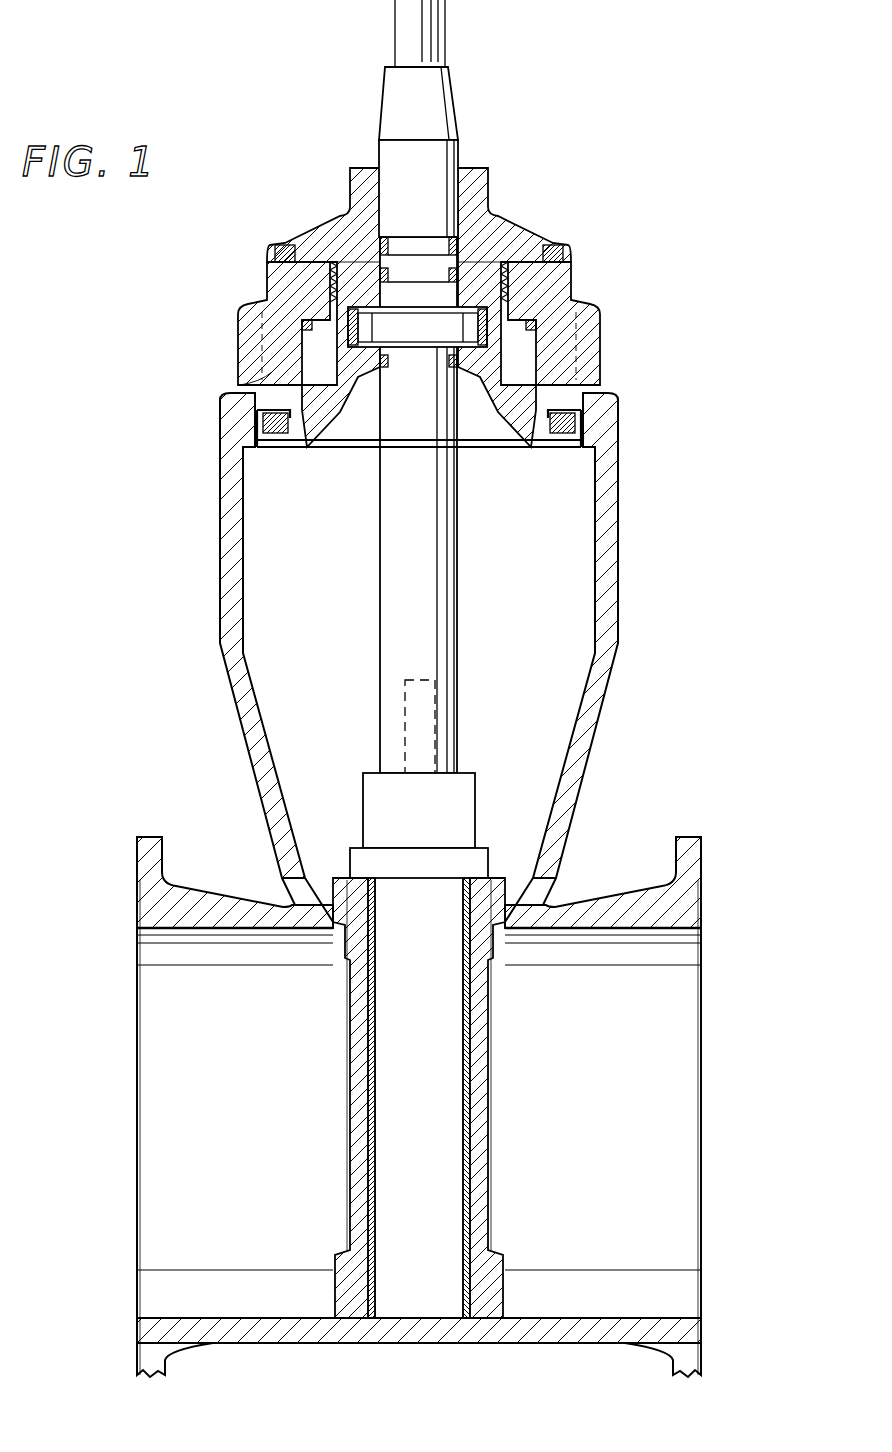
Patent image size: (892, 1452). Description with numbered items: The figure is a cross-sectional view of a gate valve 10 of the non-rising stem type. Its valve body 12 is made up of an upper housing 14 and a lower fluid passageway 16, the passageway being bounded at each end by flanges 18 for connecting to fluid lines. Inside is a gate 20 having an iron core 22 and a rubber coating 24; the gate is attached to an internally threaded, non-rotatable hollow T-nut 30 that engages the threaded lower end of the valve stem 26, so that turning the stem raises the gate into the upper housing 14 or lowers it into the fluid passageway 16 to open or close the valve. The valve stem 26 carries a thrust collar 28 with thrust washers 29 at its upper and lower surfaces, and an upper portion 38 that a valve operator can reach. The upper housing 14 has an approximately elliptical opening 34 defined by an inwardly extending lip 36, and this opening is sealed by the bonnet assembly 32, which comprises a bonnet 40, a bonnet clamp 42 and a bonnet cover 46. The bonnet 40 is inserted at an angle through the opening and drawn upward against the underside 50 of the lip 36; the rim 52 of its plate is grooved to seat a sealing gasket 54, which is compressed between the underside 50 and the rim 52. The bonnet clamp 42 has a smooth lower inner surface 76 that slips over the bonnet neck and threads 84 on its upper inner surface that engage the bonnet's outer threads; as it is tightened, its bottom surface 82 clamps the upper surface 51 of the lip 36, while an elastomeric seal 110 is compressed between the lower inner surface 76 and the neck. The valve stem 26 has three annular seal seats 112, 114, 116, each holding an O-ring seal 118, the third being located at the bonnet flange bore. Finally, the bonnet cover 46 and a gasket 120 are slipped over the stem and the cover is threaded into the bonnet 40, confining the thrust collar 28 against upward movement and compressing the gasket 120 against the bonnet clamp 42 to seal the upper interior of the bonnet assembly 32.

The gate valve 10 is at (200, 520).
The valve body 12 is at (218, 655).
The upper housing 14 is at (622, 413).
The fluid passageway 16 is at (583, 880).
The flanges 18 is at (150, 836).
The gate 20 is at (440, 1090).
The iron core 22 is at (480, 1012).
The rubber coating 24 is at (490, 1190).
The valve stem 26 is at (460, 640).
The thrust collar 28 is at (487, 330).
The thrust washers 29 is at (462, 305).
The T-nut 30 is at (480, 805).
The bonnet assembly 32 is at (305, 205).
The opening 34 is at (352, 462).
The lip 36 is at (270, 455).
The upper portion of valve stem 38 is at (430, 160).
The bonnet 40 is at (520, 445).
The bonnet clamp 42 is at (262, 275).
The bonnet cover 46 is at (300, 242).
The underside of lip 50 is at (290, 450).
The upper surface of lip 51 is at (268, 374).
The rim 52 is at (572, 430).
The sealing gasket 54 is at (580, 405).
The lower inner surface 76 is at (302, 326).
The bottom surface 82 is at (255, 394).
The threads 84 is at (240, 348).
The elastomeric seal 110 is at (575, 288).
The seal seat 112 is at (442, 240).
The seal seat 114 is at (445, 270).
The seal seat 116 is at (438, 405).
The O-ring seals 118 is at (410, 290).
The gasket 120 is at (276, 252).